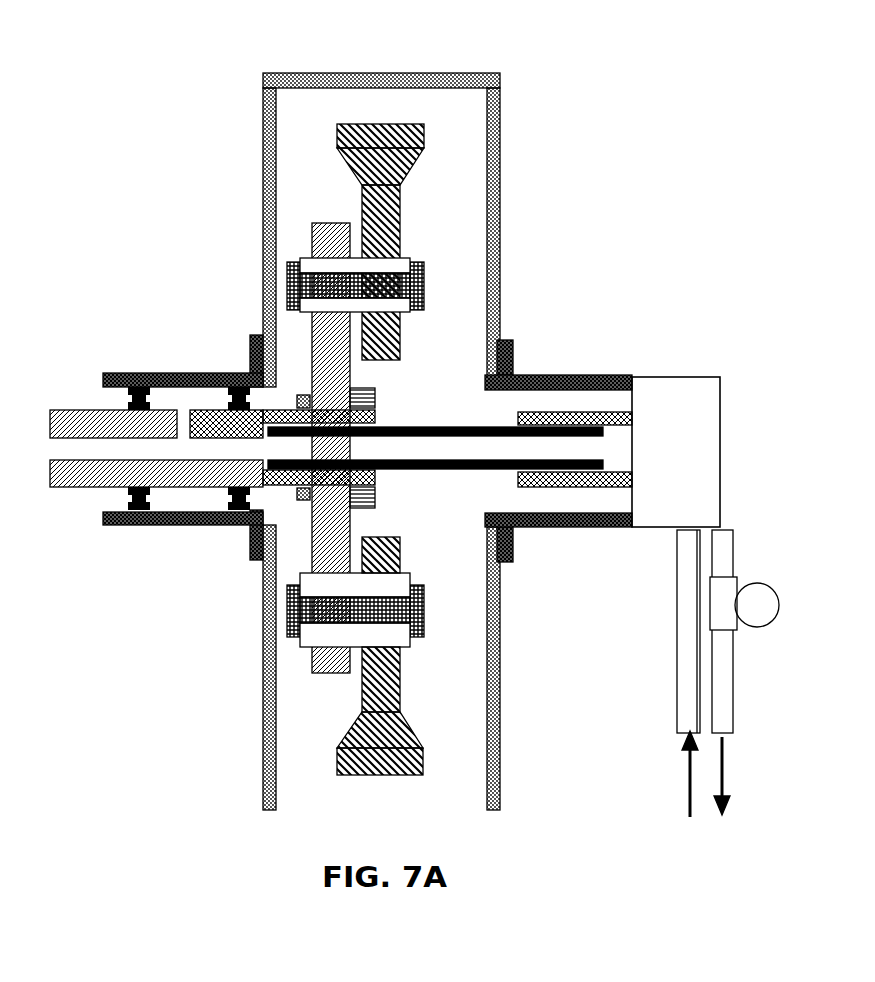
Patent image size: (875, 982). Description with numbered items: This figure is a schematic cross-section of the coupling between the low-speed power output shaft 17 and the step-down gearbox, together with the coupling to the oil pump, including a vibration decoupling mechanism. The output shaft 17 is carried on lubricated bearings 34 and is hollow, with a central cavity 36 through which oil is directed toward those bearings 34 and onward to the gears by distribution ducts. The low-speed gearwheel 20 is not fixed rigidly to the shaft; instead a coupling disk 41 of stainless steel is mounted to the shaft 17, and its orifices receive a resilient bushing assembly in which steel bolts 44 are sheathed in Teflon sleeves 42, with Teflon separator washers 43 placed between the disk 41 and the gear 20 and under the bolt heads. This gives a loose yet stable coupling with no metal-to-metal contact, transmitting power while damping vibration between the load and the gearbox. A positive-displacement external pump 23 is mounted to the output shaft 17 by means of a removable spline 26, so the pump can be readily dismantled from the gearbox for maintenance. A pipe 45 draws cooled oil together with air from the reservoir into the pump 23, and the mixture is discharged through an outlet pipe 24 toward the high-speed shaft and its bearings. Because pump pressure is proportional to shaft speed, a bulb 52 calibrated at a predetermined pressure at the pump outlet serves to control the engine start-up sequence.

The low-speed power output shaft 17 is at (107, 473).
The low-speed gearwheel 20 is at (387, 687).
The positive-displacement external oil pump 23 is at (683, 413).
The outlet pipe 24 is at (725, 687).
The removable spline 26 is at (497, 467).
The lubricated bearings 34 is at (235, 493).
The central cavity 36 is at (90, 448).
The coupling disk 41 is at (335, 358).
The sleeve 42 is at (368, 305).
The separator washers 43 is at (405, 257).
The steel bolts 44 is at (417, 280).
The pipe 45 is at (683, 687).
The bulb 52 is at (757, 595).